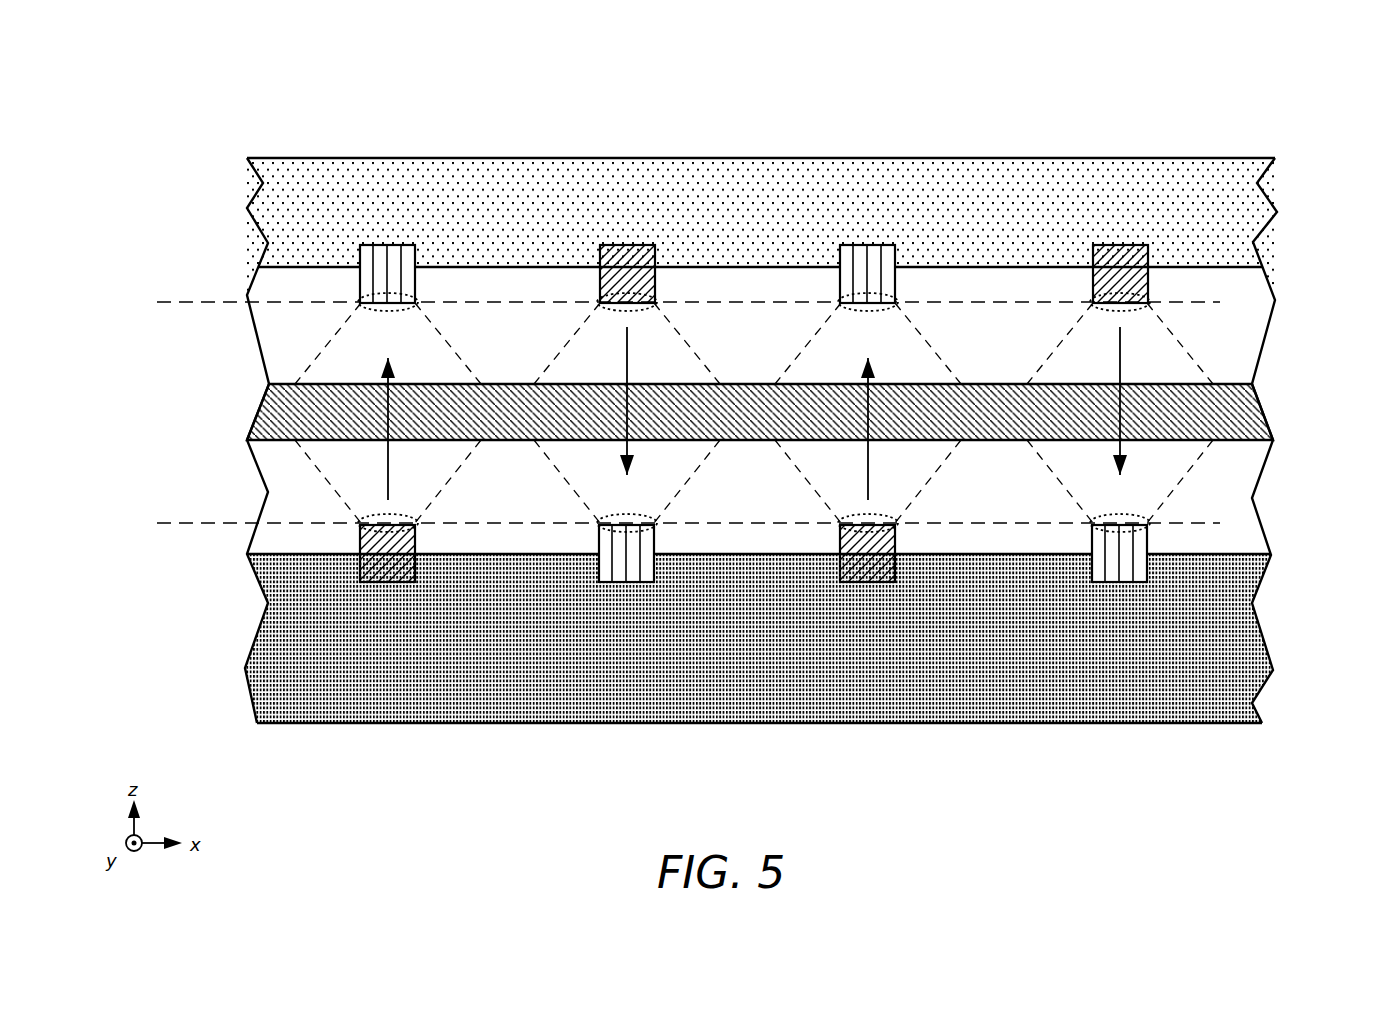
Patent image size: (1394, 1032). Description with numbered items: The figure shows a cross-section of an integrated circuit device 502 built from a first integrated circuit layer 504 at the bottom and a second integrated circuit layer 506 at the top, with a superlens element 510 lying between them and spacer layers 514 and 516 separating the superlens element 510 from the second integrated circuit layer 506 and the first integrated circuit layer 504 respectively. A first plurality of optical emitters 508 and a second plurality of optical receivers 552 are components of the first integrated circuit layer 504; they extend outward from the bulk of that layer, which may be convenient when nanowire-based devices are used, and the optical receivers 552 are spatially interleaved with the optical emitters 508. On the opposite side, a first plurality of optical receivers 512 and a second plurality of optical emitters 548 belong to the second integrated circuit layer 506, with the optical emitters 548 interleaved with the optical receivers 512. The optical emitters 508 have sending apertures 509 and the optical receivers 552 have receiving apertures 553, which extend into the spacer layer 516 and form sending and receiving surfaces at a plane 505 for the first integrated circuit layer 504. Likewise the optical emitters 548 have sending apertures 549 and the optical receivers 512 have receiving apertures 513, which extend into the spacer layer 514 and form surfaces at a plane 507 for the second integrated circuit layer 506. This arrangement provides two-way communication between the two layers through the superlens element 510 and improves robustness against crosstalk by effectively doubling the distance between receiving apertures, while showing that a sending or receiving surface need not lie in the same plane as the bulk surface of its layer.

The integrated circuit device 502 is at (122, 133).
The first integrated circuit layer 504 is at (233, 523).
The plane 505 is at (197, 521).
The second integrated circuit layer 506 is at (233, 160).
The plane 507 is at (213, 303).
The first plurality of optical emitters 508 is at (392, 582).
The sending apertures 509 is at (400, 521).
The superlens element 510 is at (1266, 415).
The first plurality of optical receivers 512 is at (388, 245).
The receiving apertures 513 is at (397, 306).
The spacer layer 514 is at (1265, 337).
The spacer layer 516 is at (1258, 488).
The second plurality of optical emitters 548 is at (625, 245).
The sending apertures 549 is at (637, 306).
The second plurality of optical receivers 552 is at (633, 582).
The receiving apertures 553 is at (640, 521).